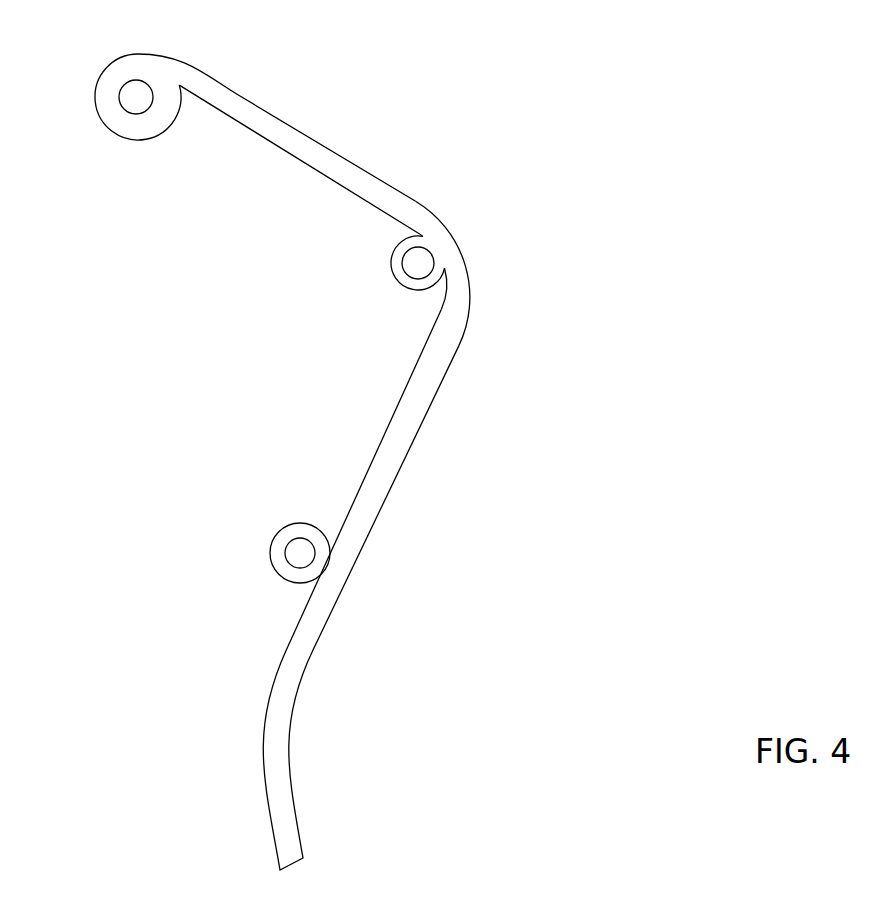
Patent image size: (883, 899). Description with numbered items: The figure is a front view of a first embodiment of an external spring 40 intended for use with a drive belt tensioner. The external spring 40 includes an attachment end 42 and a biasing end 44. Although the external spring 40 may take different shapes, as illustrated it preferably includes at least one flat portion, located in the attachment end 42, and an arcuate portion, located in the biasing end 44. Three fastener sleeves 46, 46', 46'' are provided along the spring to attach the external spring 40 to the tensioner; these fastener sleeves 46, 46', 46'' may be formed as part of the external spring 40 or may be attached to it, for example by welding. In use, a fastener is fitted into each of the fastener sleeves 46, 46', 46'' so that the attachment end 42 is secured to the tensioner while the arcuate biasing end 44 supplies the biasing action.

The external spring 40 is at (342, 451).
The attachment end 42 is at (238, 112).
The biasing end 44 is at (272, 807).
The fastener sleeve 46 is at (137, 168).
The fastener sleeve 46' is at (363, 281).
The fastener sleeve 46'' is at (228, 583).